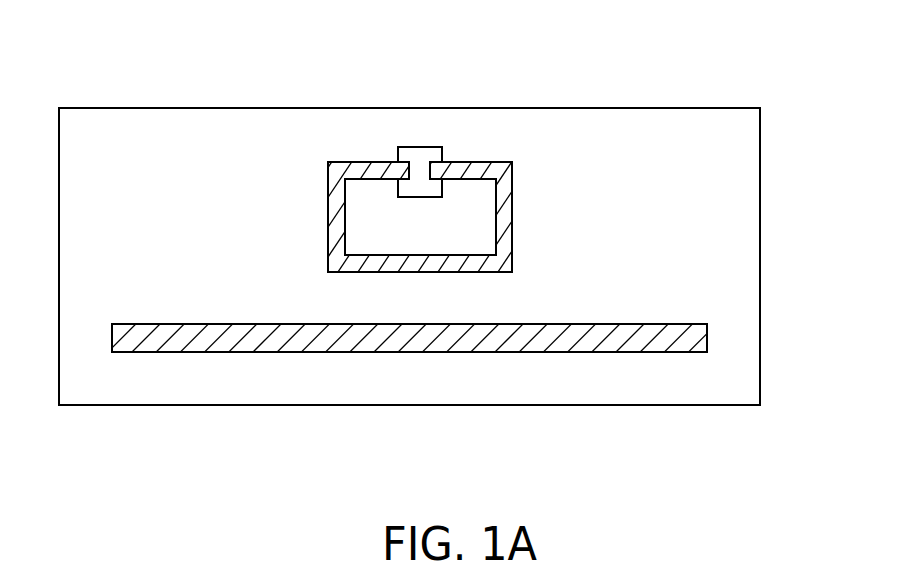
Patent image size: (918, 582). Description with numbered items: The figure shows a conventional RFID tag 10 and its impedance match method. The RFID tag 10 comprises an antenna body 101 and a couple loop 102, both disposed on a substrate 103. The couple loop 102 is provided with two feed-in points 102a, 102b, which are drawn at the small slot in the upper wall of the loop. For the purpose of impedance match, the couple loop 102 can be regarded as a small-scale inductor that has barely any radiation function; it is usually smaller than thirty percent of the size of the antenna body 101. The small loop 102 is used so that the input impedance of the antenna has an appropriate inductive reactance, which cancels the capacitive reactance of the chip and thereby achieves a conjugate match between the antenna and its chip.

The RFID tag 10 is at (671, 460).
The antenna body 101 is at (342, 352).
The couple loop 102 is at (335, 183).
The feed-in point 102a is at (409, 167).
The feed-in point 102b is at (431, 167).
The substrate 103 is at (590, 108).